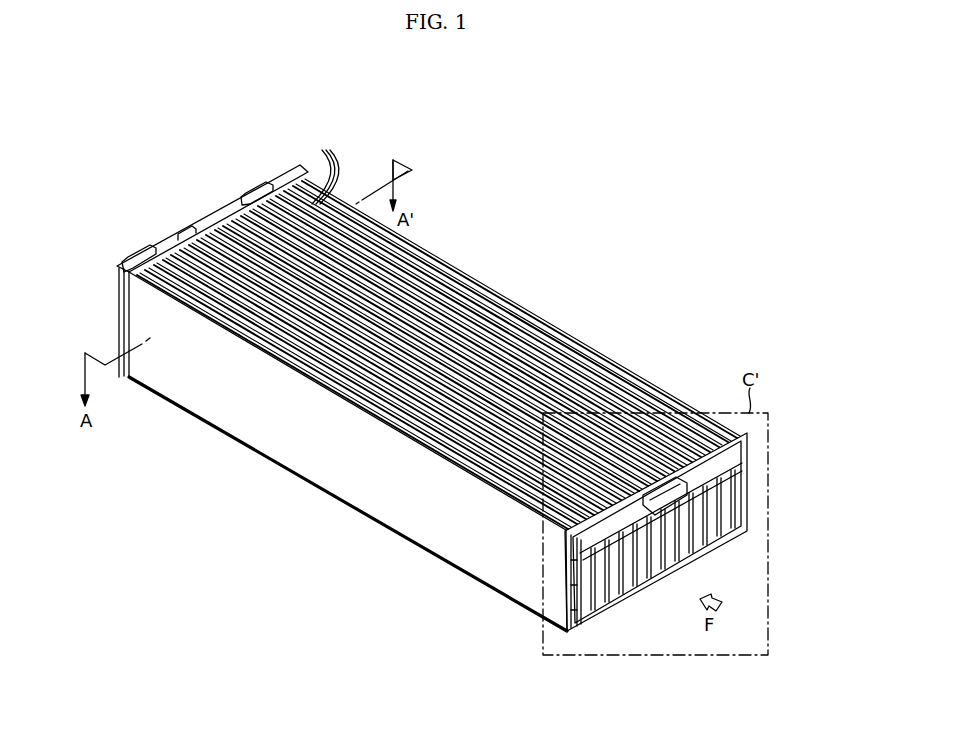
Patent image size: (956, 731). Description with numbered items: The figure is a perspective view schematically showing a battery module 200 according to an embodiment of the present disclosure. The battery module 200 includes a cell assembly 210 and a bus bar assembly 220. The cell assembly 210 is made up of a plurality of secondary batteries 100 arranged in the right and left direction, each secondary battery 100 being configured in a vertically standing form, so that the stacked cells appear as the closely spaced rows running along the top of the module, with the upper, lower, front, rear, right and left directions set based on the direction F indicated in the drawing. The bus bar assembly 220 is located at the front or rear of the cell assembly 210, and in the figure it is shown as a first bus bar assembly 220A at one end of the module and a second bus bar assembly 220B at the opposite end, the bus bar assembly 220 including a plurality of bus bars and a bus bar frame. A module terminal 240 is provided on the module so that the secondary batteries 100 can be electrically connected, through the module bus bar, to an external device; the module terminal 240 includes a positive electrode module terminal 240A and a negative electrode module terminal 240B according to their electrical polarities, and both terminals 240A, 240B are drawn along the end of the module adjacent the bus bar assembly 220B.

The battery module 200 is at (244, 88).
The secondary battery 100 is at (325, 166).
The cell assembly 210 is at (430, 340).
The bus bar assembly 220 is at (647, 173).
The bus bar assembly 220A is at (752, 585).
The bus bar assembly 220B is at (96, 302).
The module terminal 240 is at (647, 104).
The positive electrode module terminal 240A is at (135, 258).
The negative electrode module terminal 240B is at (256, 183).